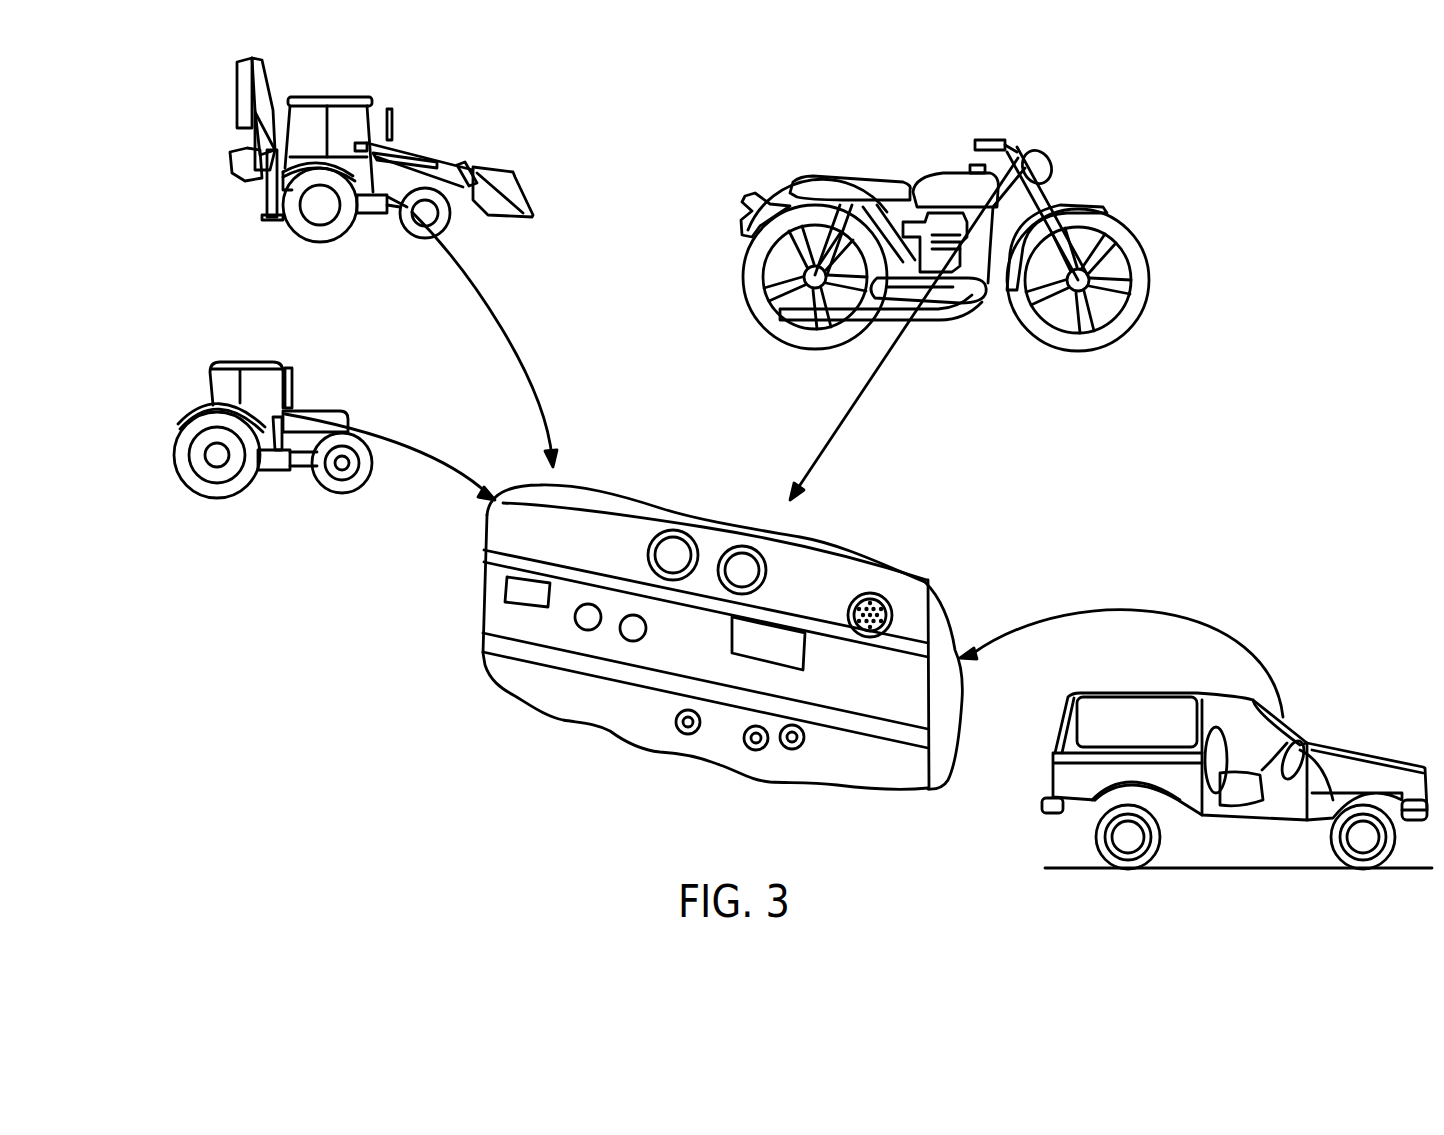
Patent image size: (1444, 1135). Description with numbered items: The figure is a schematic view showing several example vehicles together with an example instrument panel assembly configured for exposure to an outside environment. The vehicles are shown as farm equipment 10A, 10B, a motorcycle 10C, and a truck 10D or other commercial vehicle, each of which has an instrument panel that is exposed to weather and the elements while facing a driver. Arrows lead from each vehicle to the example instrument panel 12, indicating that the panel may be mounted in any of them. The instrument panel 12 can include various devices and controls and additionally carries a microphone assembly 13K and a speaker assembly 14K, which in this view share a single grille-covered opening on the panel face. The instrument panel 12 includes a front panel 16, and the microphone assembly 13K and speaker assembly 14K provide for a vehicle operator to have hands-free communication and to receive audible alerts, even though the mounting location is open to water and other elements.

The farm equipment 10A is at (190, 90).
The farm equipment 10B is at (190, 322).
The motorcycle 10C is at (771, 139).
The truck 10D is at (1027, 806).
The instrument panel 12 is at (952, 588).
The microphone assembly 13K is at (880, 587).
The speaker assembly 14K is at (870, 615).
The front panel 16 is at (815, 575).